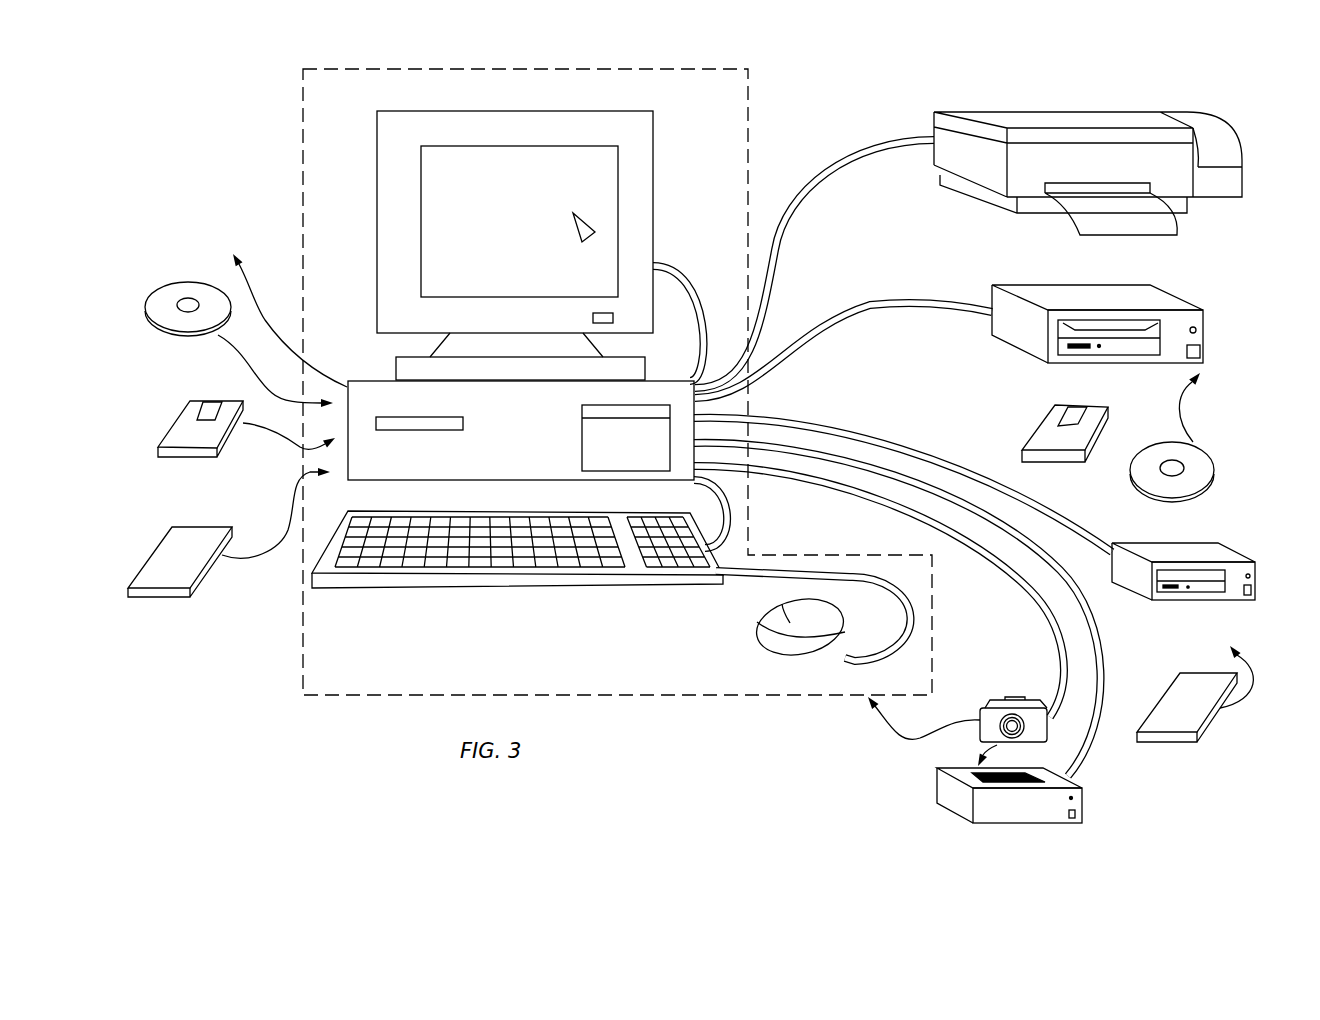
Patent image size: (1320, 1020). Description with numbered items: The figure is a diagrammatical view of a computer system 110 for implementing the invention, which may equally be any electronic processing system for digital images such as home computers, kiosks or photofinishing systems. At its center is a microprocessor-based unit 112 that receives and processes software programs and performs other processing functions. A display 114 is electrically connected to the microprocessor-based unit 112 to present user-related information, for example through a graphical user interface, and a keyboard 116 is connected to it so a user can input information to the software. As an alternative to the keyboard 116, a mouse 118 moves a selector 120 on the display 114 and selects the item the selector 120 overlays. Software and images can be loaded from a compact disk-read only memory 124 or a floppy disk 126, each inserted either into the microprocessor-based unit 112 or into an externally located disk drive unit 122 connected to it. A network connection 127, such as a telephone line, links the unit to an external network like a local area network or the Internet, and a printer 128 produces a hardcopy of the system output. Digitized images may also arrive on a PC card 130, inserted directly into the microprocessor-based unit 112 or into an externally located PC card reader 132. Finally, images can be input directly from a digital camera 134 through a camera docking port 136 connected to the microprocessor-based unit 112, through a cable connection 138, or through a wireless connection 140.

The computer system 110 is at (764, 92).
The microprocessor-based unit 112 is at (372, 380).
The display 114 is at (490, 111).
The keyboard 116 is at (448, 587).
The mouse 118 is at (770, 642).
The selector 120 is at (596, 225).
The externally located disk drive unit 122 is at (1035, 287).
The compact disk-read only memory (CD-ROM) 124 is at (165, 283).
The floppy disk 126 is at (178, 412).
The network connection 127 is at (269, 312).
The printer 128 is at (1045, 112).
The personal computer card (PC card) 130 is at (172, 530).
The externally located PC card reader 132 is at (1202, 597).
The digital camera 134 is at (1013, 697).
The camera docking port 136 is at (953, 805).
The cable connection 138 is at (1022, 586).
The wireless connection 140 is at (903, 739).